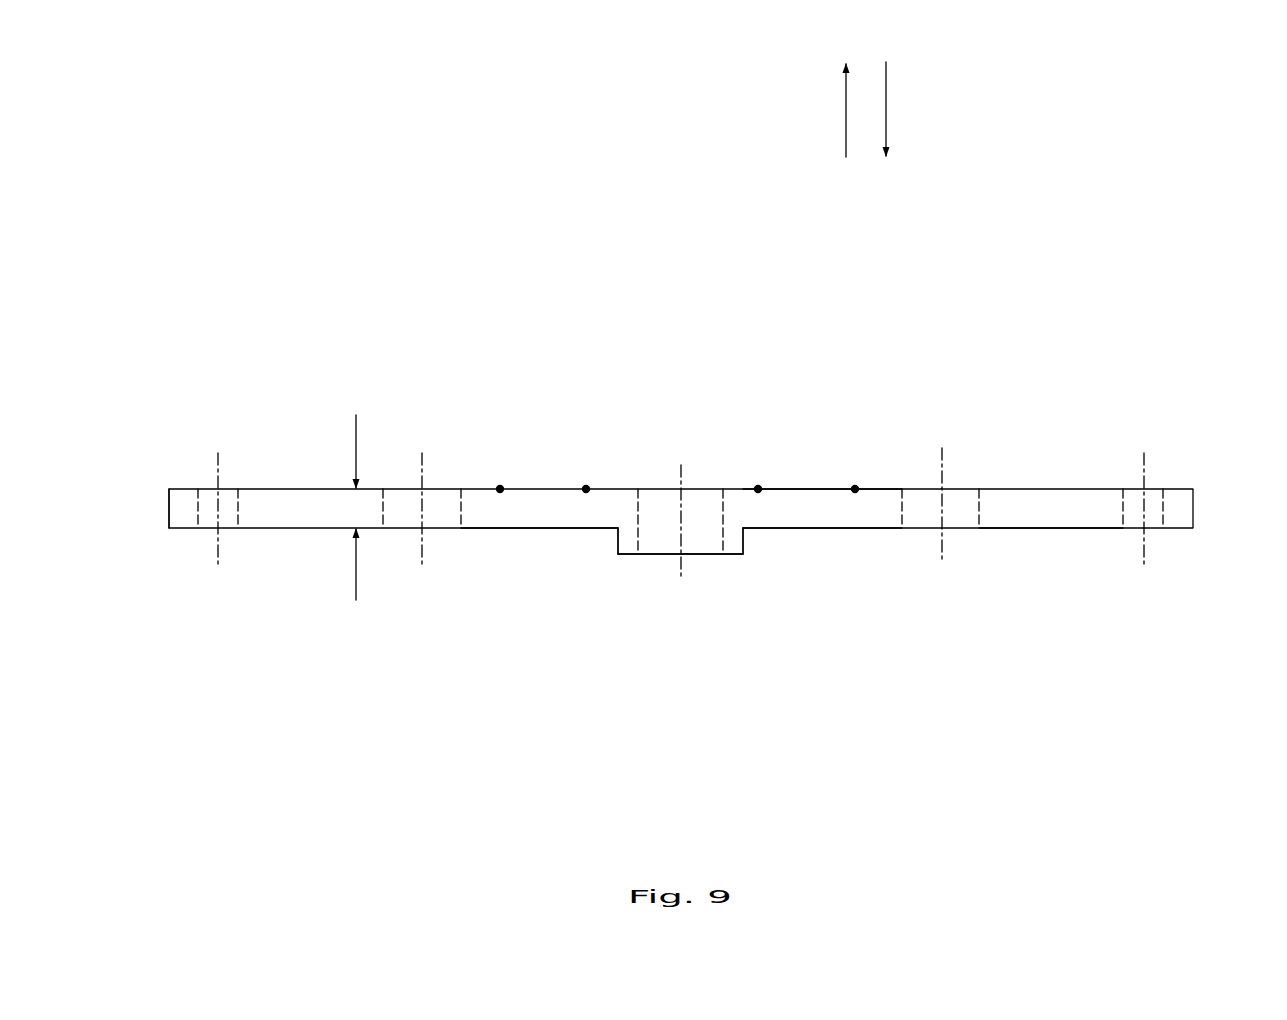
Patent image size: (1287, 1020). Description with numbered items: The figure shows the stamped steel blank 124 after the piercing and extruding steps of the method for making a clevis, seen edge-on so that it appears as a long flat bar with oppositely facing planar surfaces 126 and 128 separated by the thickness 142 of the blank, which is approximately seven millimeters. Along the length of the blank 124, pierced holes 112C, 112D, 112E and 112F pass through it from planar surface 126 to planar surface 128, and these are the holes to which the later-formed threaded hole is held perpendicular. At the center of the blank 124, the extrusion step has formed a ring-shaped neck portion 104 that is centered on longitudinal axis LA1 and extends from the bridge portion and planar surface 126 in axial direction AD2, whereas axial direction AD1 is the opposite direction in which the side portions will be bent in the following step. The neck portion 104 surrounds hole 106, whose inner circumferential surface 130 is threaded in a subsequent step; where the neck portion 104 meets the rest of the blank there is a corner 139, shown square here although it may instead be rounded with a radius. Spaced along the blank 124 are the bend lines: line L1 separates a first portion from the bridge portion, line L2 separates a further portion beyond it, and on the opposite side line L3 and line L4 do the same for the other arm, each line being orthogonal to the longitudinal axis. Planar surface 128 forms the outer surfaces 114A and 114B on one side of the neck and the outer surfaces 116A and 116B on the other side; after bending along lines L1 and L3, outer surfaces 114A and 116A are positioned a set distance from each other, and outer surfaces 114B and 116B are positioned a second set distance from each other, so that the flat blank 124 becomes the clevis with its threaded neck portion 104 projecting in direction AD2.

The ring-shaped neck portion 104 is at (618, 530).
The hole 106 is at (661, 503).
The hole 112C is at (443, 497).
The hole 112D is at (230, 503).
The hole 112E is at (957, 503).
The hole 112F is at (1155, 503).
The outer surface 114A is at (523, 528).
The outer surface 114B is at (310, 528).
The outer surface 116A is at (773, 528).
The outer surface 116B is at (1048, 528).
The blank 124 is at (1151, 224).
The planar surface 126 is at (798, 488).
The planar surface 128 is at (806, 530).
The inner circumferential surface 130 is at (638, 527).
The corner 139 is at (618, 530).
The thickness 142 is at (354, 528).
The line L1 is at (586, 489).
The line L2 is at (758, 489).
The line L3 is at (500, 489).
The line L4 is at (855, 489).
The longitudinal axis LA1 is at (681, 489).
The axial direction AD1 is at (846, 115).
The axial direction AD2 is at (886, 103).